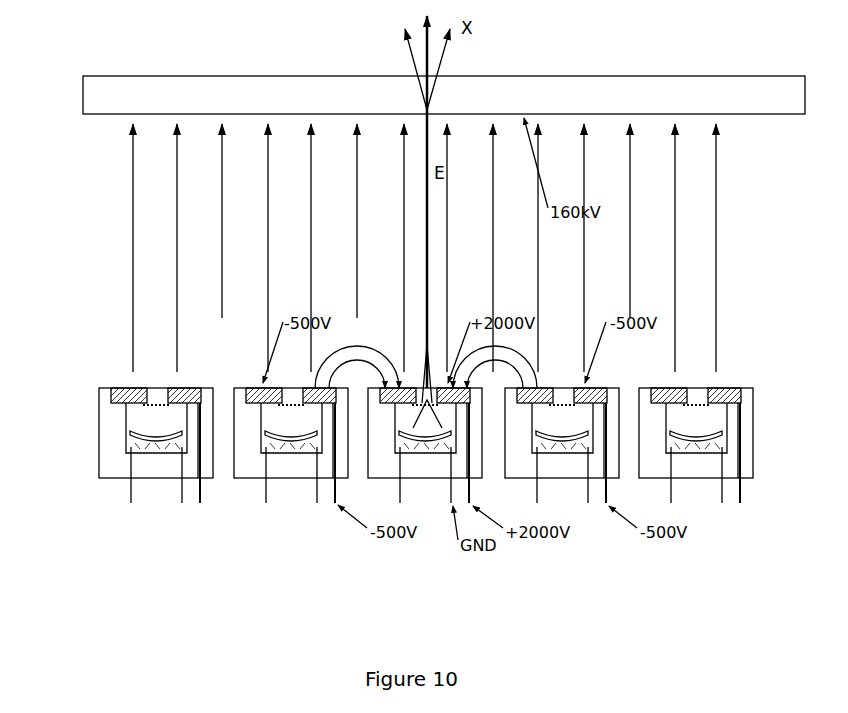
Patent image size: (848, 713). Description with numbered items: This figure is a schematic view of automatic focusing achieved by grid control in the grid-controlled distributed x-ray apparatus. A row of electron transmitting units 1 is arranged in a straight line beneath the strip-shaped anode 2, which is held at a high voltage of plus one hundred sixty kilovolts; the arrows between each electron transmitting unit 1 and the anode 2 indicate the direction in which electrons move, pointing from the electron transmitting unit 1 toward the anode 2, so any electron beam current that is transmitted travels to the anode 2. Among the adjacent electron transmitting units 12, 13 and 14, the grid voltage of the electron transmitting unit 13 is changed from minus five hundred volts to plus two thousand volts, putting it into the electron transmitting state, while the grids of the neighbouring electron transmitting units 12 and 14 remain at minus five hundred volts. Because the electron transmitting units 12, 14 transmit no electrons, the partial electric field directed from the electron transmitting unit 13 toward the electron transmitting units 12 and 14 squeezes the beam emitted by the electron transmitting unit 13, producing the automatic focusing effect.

The electron transmitting unit 1 is at (98, 392).
The anode 2 is at (82, 118).
The electron transmitting unit 12 is at (278, 577).
The electron transmitting unit 13 is at (420, 576).
The electron transmitting unit 14 is at (573, 570).